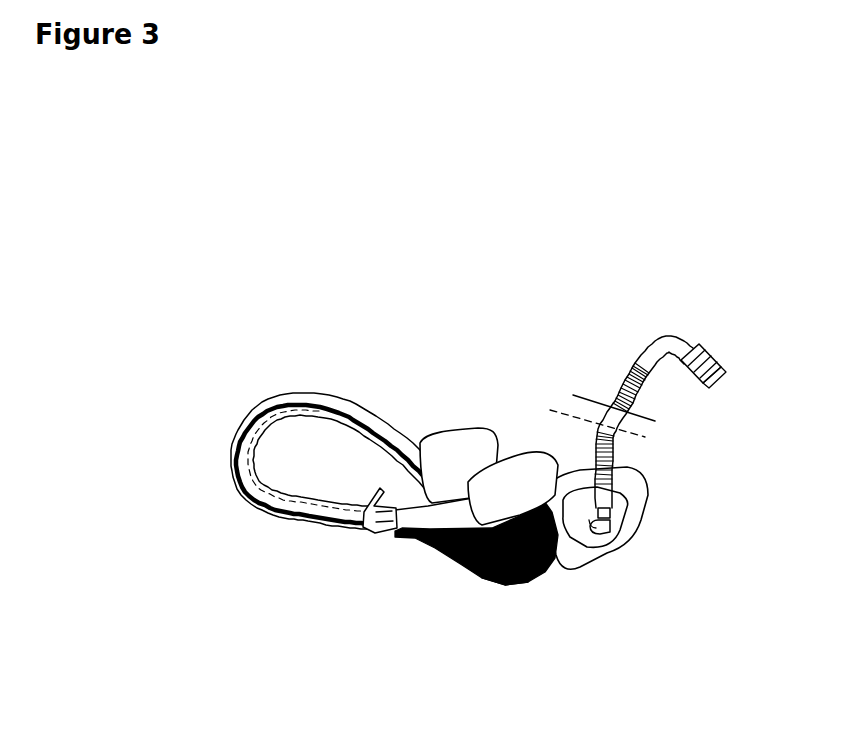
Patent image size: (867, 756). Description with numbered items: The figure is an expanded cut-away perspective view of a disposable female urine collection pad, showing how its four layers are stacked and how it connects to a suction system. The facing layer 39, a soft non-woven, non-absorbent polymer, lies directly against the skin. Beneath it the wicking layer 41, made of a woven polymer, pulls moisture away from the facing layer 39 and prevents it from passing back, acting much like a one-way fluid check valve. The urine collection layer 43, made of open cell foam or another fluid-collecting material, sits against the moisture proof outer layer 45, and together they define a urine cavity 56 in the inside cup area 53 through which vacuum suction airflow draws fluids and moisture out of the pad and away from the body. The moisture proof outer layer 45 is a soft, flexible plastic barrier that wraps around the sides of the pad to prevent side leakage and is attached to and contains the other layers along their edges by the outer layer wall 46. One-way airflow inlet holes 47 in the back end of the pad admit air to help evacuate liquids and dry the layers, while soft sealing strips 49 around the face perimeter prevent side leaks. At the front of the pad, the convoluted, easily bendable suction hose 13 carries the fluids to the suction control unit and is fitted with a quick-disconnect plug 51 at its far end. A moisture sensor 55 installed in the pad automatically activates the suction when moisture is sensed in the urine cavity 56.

The suction hose 13 is at (618, 388).
The facing layer 39 is at (447, 456).
The wicking layer 41 is at (518, 479).
The urine collection layer 43 is at (472, 572).
The moisture proof outer layer 45 is at (569, 564).
The outer layer wall 46 is at (272, 466).
The one-way airflow inlet holes 47 is at (238, 427).
The soft sealing strips 49 is at (370, 505).
The quick-disconnect plug 51 is at (708, 362).
The inside cup area 53 is at (523, 591).
The moisture sensor 55 is at (594, 533).
The urine cavity 56 is at (452, 540).